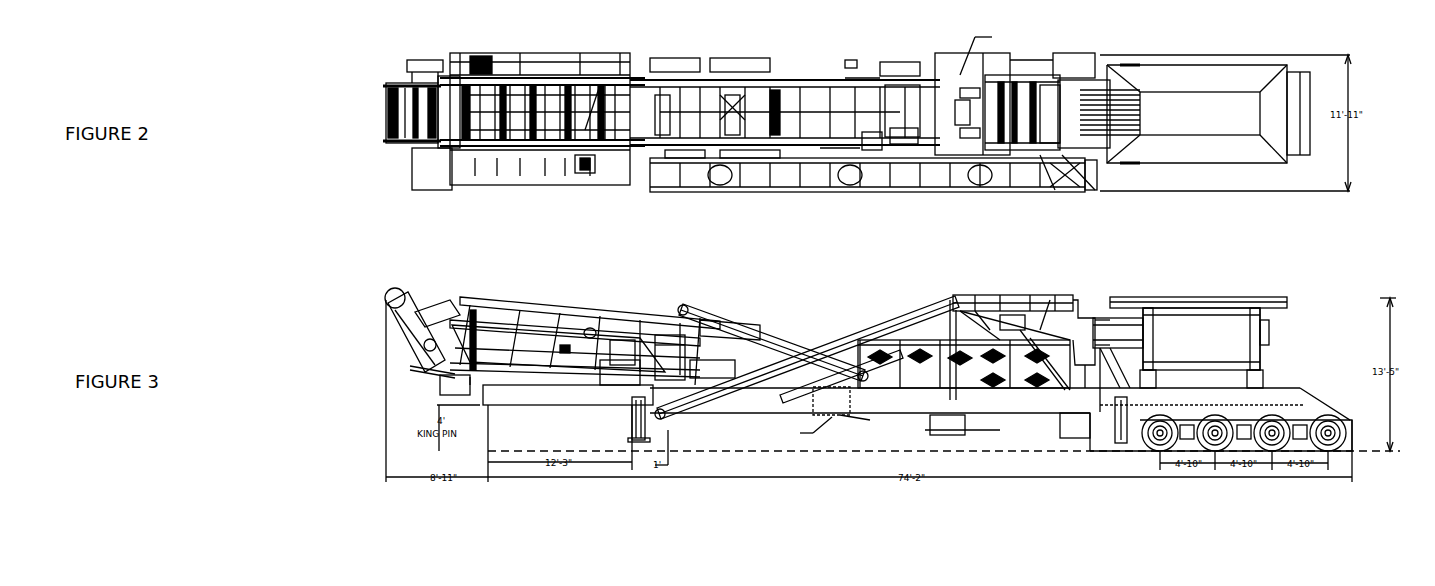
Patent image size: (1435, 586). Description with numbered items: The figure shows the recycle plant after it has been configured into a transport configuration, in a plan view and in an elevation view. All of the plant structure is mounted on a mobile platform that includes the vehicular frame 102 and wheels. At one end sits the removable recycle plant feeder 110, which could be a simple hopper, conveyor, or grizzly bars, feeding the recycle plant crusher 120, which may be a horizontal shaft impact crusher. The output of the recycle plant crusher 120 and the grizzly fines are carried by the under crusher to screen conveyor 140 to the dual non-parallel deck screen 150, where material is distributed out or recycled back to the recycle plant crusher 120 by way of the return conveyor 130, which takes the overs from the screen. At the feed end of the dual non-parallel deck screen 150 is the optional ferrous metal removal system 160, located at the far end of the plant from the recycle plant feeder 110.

In FIG. 3, the vehicular frame 102 is at (903, 405).
In FIG. 2, the recycle plant feeder 110 is at (1213, 108).
In FIG. 3, the recycle plant feeder 110 is at (1203, 278).
In FIG. 2, the recycle plant crusher 120 is at (1030, 112).
In FIG. 3, the recycle plant crusher 120 is at (1025, 340).
In FIG. 2, the return conveyor 130 is at (962, 183).
In FIG. 3, the return conveyor 130 is at (855, 325).
In FIG. 2, the under crusher to screen conveyor 140 is at (782, 85).
In FIG. 3, the under crusher to screen conveyor 140 is at (732, 322).
In FIG. 2, the dual non-parallel deck screen 150 is at (586, 92).
In FIG. 3, the dual non-parallel deck screen 150 is at (543, 328).
In FIG. 2, the ferrous metal removal system 160 is at (382, 107).
In FIG. 3, the ferrous metal removal system 160 is at (405, 290).